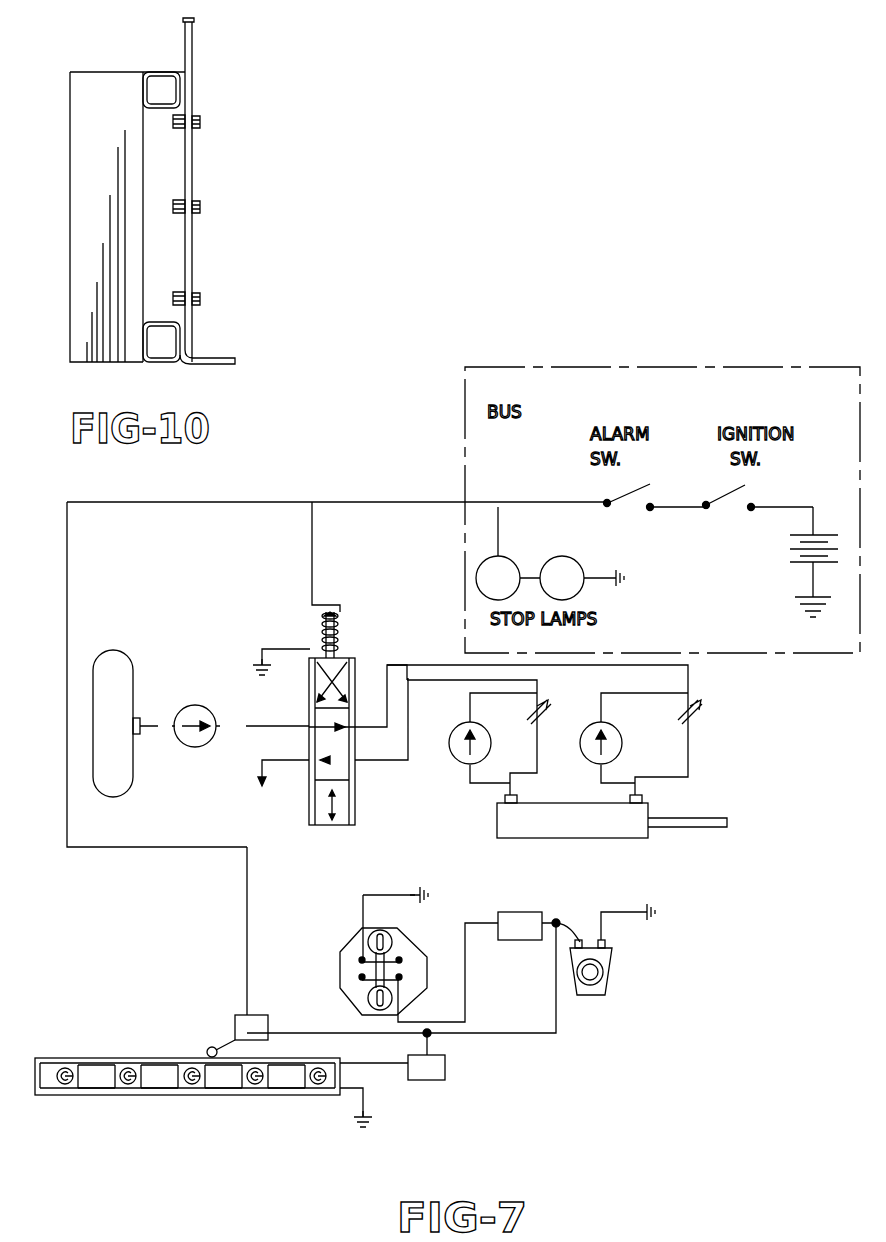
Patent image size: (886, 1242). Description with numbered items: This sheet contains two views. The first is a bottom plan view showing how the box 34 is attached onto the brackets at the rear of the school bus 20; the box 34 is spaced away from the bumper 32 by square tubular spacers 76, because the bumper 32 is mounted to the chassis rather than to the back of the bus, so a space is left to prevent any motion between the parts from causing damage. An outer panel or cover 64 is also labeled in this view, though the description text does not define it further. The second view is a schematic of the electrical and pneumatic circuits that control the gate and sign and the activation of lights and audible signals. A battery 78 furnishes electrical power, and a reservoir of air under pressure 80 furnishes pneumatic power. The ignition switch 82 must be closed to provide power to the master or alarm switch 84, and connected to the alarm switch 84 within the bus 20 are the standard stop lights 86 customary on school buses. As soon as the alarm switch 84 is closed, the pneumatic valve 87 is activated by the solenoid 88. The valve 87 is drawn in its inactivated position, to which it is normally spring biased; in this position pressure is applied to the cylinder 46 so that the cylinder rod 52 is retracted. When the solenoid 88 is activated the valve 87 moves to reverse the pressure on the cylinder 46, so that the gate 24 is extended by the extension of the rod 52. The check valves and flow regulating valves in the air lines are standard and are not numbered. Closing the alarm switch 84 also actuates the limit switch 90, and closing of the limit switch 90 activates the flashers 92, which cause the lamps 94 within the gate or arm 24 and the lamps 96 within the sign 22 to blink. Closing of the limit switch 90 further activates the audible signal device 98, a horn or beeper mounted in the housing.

In FIG. 10, the square tubular spacer 76 is at (163, 72).
In FIG. 10, the housing 64 is at (70, 105).
In FIG. 10, the box 34 is at (101, 174).
In FIG. 10, the bumper 32 is at (193, 245).
In FIG. 7, the school bus 20 is at (510, 474).
In FIG. 7, the alarm switch 84 is at (612, 510).
In FIG. 7, the ignition switch 82 is at (733, 506).
In FIG. 7, the battery 78 is at (788, 555).
In FIG. 7, the stop lights 86 is at (578, 562).
In FIG. 7, the solenoid 88 is at (320, 640).
In FIG. 7, the reservoir of air under pressure 80 is at (125, 700).
In FIG. 7, the pneumatic valve 87 is at (357, 808).
In FIG. 7, the cylinder 46 is at (564, 830).
In FIG. 7, the cylinder rod 52 is at (690, 826).
In FIG. 7, the lamps 96 is at (370, 940).
In FIG. 7, the sign 22 is at (340, 972).
In FIG. 7, the flashers 92 is at (522, 936).
In FIG. 7, the audible signal device 98 is at (612, 978).
In FIG. 7, the limit switch 90 is at (262, 1020).
In FIG. 7, the gate 24 is at (165, 1058).
In FIG. 7, the lamps 94 is at (68, 1085).